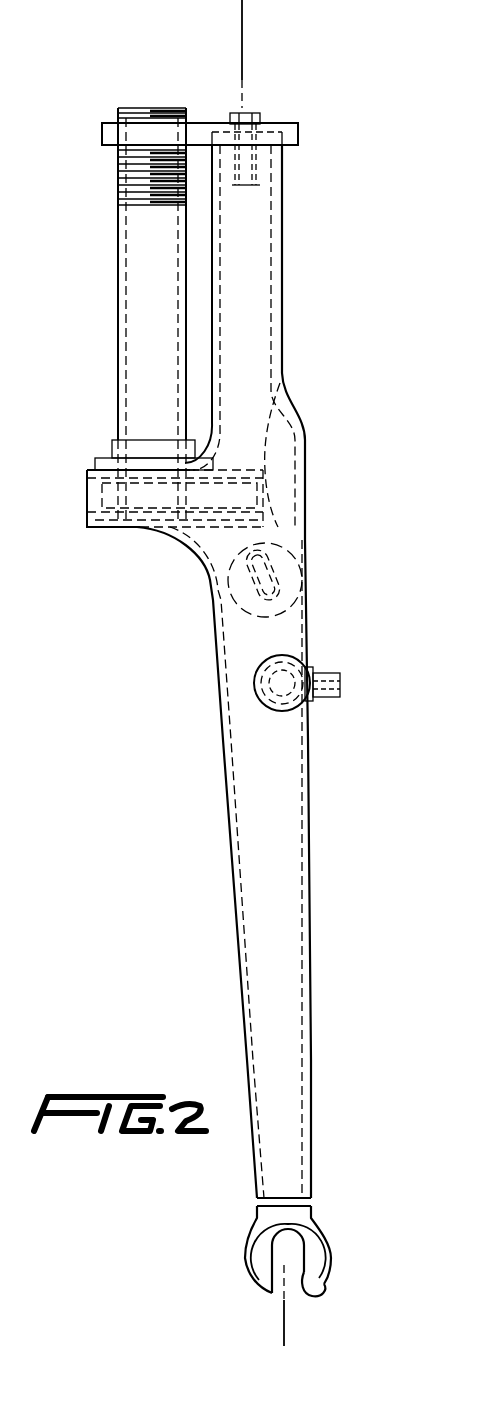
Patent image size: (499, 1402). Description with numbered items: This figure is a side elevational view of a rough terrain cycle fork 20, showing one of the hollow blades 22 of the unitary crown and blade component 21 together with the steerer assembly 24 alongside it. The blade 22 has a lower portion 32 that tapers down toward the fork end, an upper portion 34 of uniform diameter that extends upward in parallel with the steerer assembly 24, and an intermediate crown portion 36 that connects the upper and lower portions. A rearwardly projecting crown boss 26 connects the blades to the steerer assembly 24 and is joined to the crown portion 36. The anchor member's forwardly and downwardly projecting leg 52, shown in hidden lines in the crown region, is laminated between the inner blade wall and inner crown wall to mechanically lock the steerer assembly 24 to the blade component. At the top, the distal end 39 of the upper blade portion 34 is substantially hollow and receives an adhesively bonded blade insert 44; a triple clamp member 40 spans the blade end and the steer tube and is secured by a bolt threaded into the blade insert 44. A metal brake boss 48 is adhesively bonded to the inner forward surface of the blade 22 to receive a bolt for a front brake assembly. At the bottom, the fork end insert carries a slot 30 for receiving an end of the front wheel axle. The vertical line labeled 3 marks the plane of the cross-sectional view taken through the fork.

The section line 3- 3 is at (243, 27).
The rough terrain cycle fork 20 is at (195, 98).
The triple clamp member 40 is at (101, 143).
The steerer assembly 24 is at (118, 280).
The distal end of upper blade portion 39 is at (283, 155).
The blade insert 44 is at (265, 180).
The unitary crown and blade component 21 is at (286, 281).
The upper portion of fork blade 34 is at (284, 340).
The intermediate crown portion 36 is at (305, 477).
The crown boss 26 is at (113, 530).
The anchor member leg 52 is at (228, 563).
The hollow blade 22 is at (206, 684).
The brake boss 48 is at (332, 673).
The lower portion of fork blade 32 is at (309, 847).
The slot or aperture of fork end 30 is at (312, 1296).